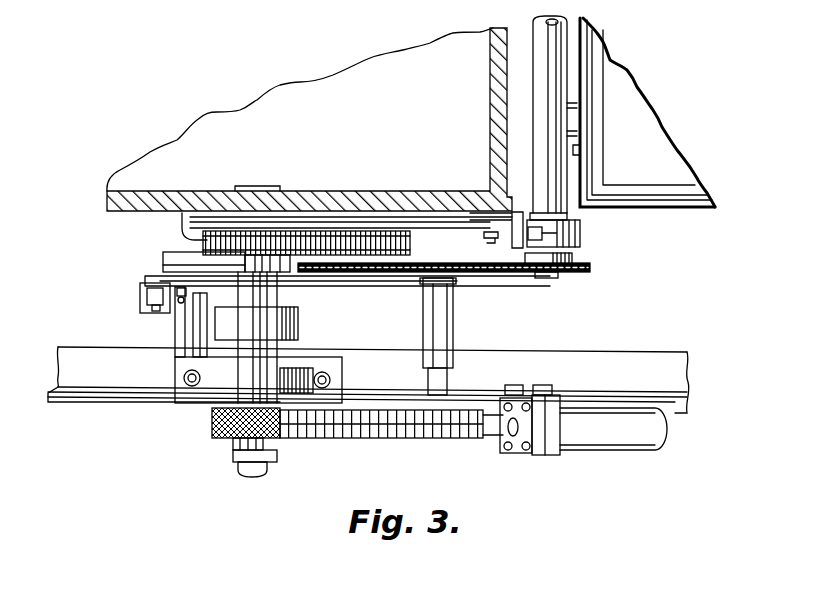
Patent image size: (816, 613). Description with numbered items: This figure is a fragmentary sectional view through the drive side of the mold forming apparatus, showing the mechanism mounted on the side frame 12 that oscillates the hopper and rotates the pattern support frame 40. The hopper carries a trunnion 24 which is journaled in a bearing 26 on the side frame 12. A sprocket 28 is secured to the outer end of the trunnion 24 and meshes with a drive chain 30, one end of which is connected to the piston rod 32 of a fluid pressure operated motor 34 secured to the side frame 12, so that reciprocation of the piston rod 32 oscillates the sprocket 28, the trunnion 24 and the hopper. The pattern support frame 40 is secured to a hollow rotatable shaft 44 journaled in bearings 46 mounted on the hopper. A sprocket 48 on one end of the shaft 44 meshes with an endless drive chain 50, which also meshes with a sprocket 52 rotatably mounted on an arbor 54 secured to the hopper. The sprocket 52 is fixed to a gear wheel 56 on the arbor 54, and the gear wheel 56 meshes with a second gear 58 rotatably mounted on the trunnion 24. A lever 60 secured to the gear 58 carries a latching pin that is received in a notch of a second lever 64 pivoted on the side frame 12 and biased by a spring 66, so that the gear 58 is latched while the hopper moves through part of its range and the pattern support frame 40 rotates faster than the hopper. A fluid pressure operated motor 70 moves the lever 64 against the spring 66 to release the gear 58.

The side frame 12 is at (68, 402).
The trunnion 24 is at (242, 465).
The bearing 26 is at (180, 363).
The sprocket 28 is at (233, 443).
The drive chain 30 is at (217, 418).
The piston rod 32 is at (497, 430).
The fluid pressure operated motor 34 is at (598, 428).
The pattern support frame 40 is at (653, 127).
The hollow rotatable shaft 44 is at (581, 237).
The bearing 46 is at (568, 213).
The sprocket 48 is at (573, 261).
The endless drive chain 50 is at (590, 270).
The sprocket 52 is at (398, 262).
The arbor 54 is at (375, 286).
The gear wheel 56 is at (410, 262).
The second gear 58 is at (199, 199).
The lever 60 is at (163, 260).
The second lever 64 is at (145, 280).
The spring 66 is at (180, 300).
The fluid pressure operated motor 70 is at (140, 298).